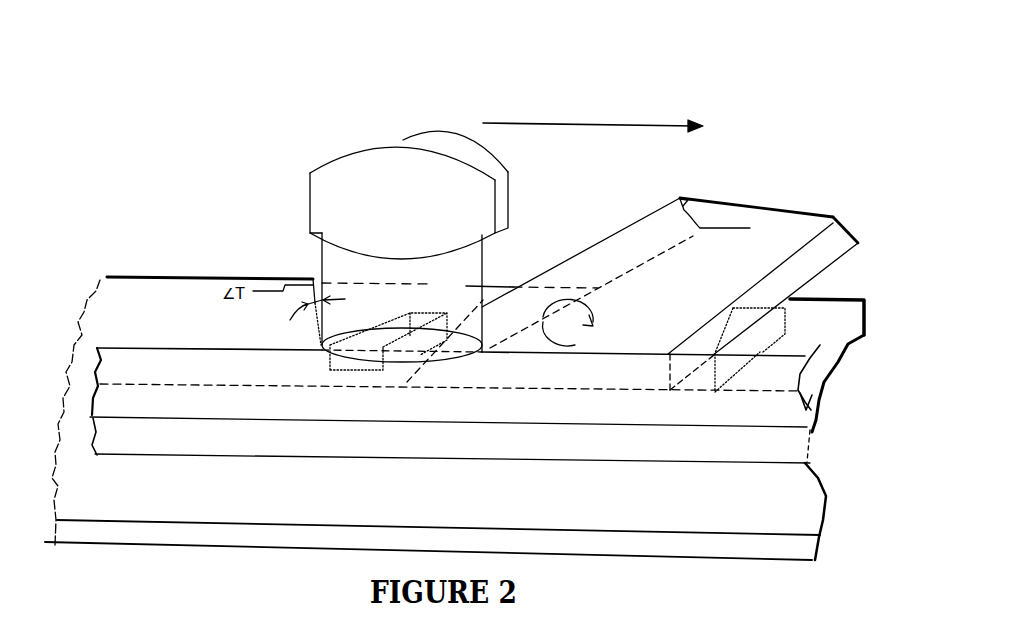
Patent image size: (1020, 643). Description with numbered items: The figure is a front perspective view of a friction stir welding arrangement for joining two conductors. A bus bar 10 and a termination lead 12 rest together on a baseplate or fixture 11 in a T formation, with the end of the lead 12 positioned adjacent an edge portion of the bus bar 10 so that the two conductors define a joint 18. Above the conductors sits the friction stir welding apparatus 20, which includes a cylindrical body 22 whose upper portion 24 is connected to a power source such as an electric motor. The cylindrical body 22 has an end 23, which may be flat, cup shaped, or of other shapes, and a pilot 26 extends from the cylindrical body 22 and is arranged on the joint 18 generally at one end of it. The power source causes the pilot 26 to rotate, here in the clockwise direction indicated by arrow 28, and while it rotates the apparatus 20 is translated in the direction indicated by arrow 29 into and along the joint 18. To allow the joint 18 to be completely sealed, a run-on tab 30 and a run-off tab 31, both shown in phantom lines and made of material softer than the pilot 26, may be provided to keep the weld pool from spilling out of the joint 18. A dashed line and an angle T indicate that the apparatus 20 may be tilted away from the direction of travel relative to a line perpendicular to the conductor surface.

The bus bar 10 is at (710, 452).
The baseplate or fixture 11 is at (802, 497).
The lead 12 is at (824, 260).
The joint 18 is at (620, 353).
The apparatus 20 is at (347, 229).
The cylindrical body 22 is at (313, 273).
The end 23 is at (331, 350).
The upper portion 24 is at (310, 206).
The pilot 26 is at (400, 370).
The arrow 28 is at (578, 300).
The arrow 29 is at (577, 122).
The run-on tab 30 is at (418, 313).
The run-off tab 31 is at (790, 322).